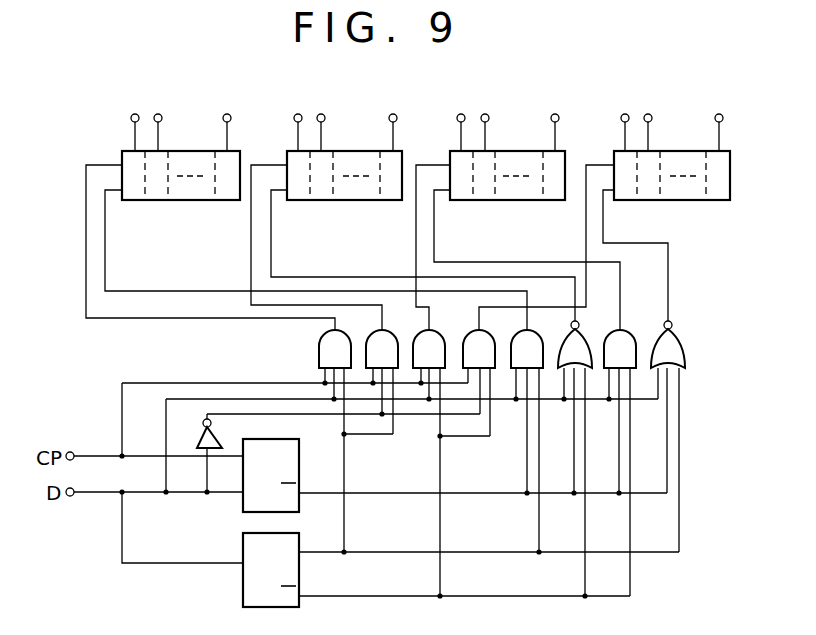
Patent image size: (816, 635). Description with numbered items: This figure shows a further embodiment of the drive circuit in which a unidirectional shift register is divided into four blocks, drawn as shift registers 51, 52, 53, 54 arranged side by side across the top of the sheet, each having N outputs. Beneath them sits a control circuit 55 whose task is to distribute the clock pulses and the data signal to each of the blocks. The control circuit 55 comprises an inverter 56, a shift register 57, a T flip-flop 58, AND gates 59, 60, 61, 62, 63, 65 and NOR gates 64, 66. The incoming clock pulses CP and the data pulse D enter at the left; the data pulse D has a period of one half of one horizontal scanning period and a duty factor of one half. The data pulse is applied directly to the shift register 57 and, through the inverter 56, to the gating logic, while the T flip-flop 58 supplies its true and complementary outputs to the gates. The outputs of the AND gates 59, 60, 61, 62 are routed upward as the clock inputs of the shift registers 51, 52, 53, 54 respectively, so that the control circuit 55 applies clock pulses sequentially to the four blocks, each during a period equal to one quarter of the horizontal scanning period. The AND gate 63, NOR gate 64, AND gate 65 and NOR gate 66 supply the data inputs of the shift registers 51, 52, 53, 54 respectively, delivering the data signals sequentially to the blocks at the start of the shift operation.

The shift register 51 is at (167, 200).
The shift register 52 is at (335, 200).
The shift register 53 is at (497, 200).
The shift register 54 is at (668, 200).
The control circuit 55 is at (244, 363).
The inverter 56 is at (192, 429).
The shift register 57 is at (300, 454).
The T flip-flop 58 is at (300, 576).
The AND gate 59 is at (319, 355).
The AND gate 60 is at (366, 346).
The AND gate 61 is at (413, 346).
The AND gate 62 is at (463, 346).
The AND gate 63 is at (511, 346).
The NOR gate 64 is at (558, 346).
The AND gate 65 is at (605, 346).
The NOR gate 66 is at (654, 346).